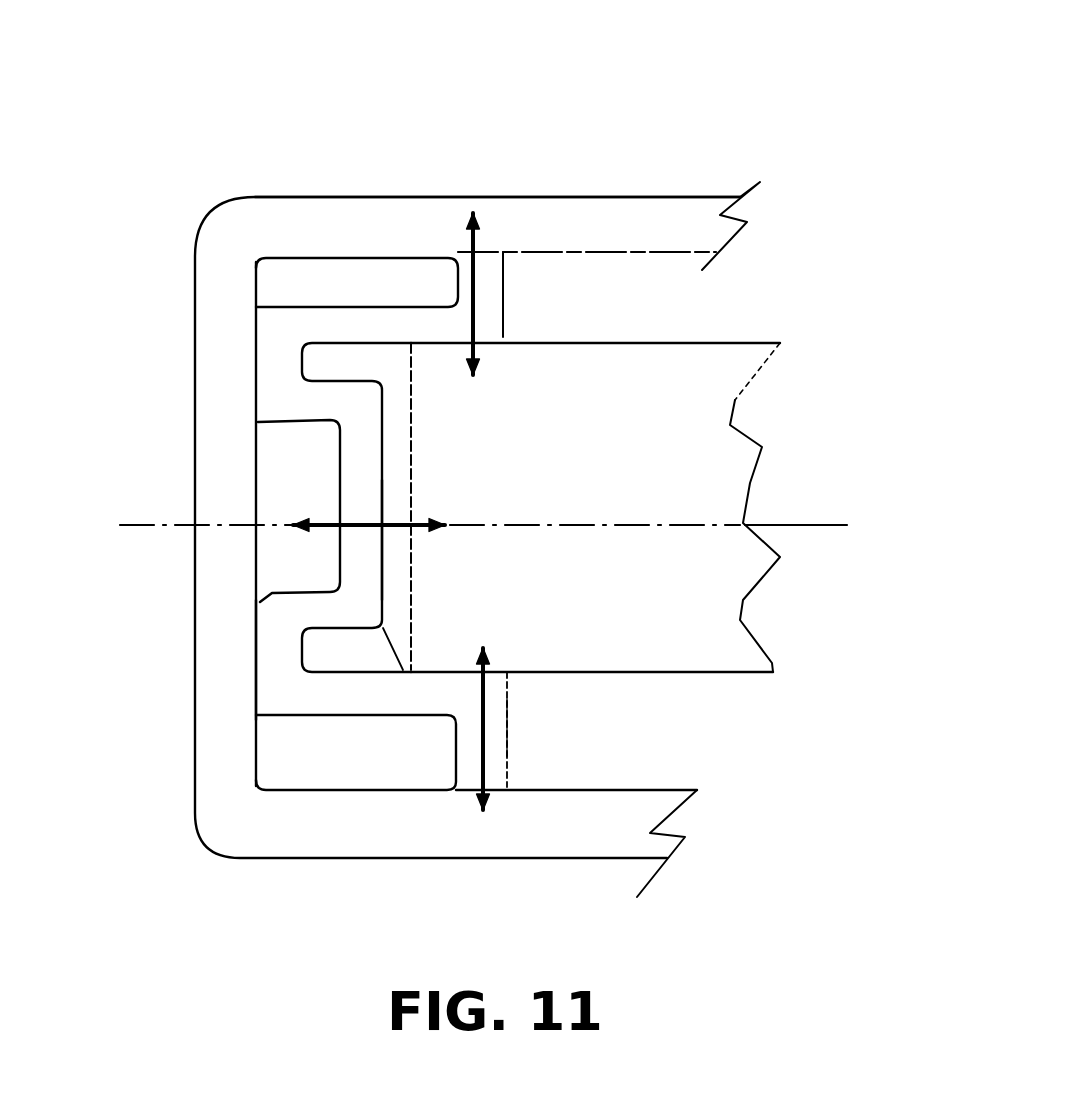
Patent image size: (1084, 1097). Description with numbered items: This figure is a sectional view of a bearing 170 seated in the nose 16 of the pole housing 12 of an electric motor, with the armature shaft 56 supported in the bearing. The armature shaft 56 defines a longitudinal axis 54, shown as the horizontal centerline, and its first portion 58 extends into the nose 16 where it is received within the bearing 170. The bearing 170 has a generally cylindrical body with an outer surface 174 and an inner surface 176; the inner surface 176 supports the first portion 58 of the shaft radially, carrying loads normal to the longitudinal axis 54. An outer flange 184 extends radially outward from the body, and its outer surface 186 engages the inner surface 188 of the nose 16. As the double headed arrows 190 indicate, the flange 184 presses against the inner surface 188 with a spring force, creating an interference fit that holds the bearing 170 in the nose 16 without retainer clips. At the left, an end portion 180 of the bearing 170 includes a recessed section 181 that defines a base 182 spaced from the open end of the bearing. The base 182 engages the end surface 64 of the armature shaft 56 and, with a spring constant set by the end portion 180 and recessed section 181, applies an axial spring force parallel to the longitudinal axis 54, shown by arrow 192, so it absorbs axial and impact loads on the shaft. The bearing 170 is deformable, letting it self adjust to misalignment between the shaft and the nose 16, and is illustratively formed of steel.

The pole housing 12 is at (708, 158).
The nose 16 is at (432, 197).
The longitudinal axis 54 is at (803, 517).
The armature shaft 56 is at (594, 455).
The first portion of armature shaft 58 is at (663, 582).
The end surface of armature shaft 64 is at (375, 553).
The bearing 170 is at (335, 278).
The outer surface 174 is at (375, 687).
The inner surface 176 is at (378, 349).
The end portion 180 is at (258, 675).
The recessed section 181 is at (333, 482).
The base 182 is at (378, 593).
The outer flange 184 is at (513, 731).
The outer surface of flange 186 is at (503, 252).
The inner surface of nose 188 is at (653, 242).
The double headed arrows 190 is at (475, 295).
The arrow 192 is at (353, 523).